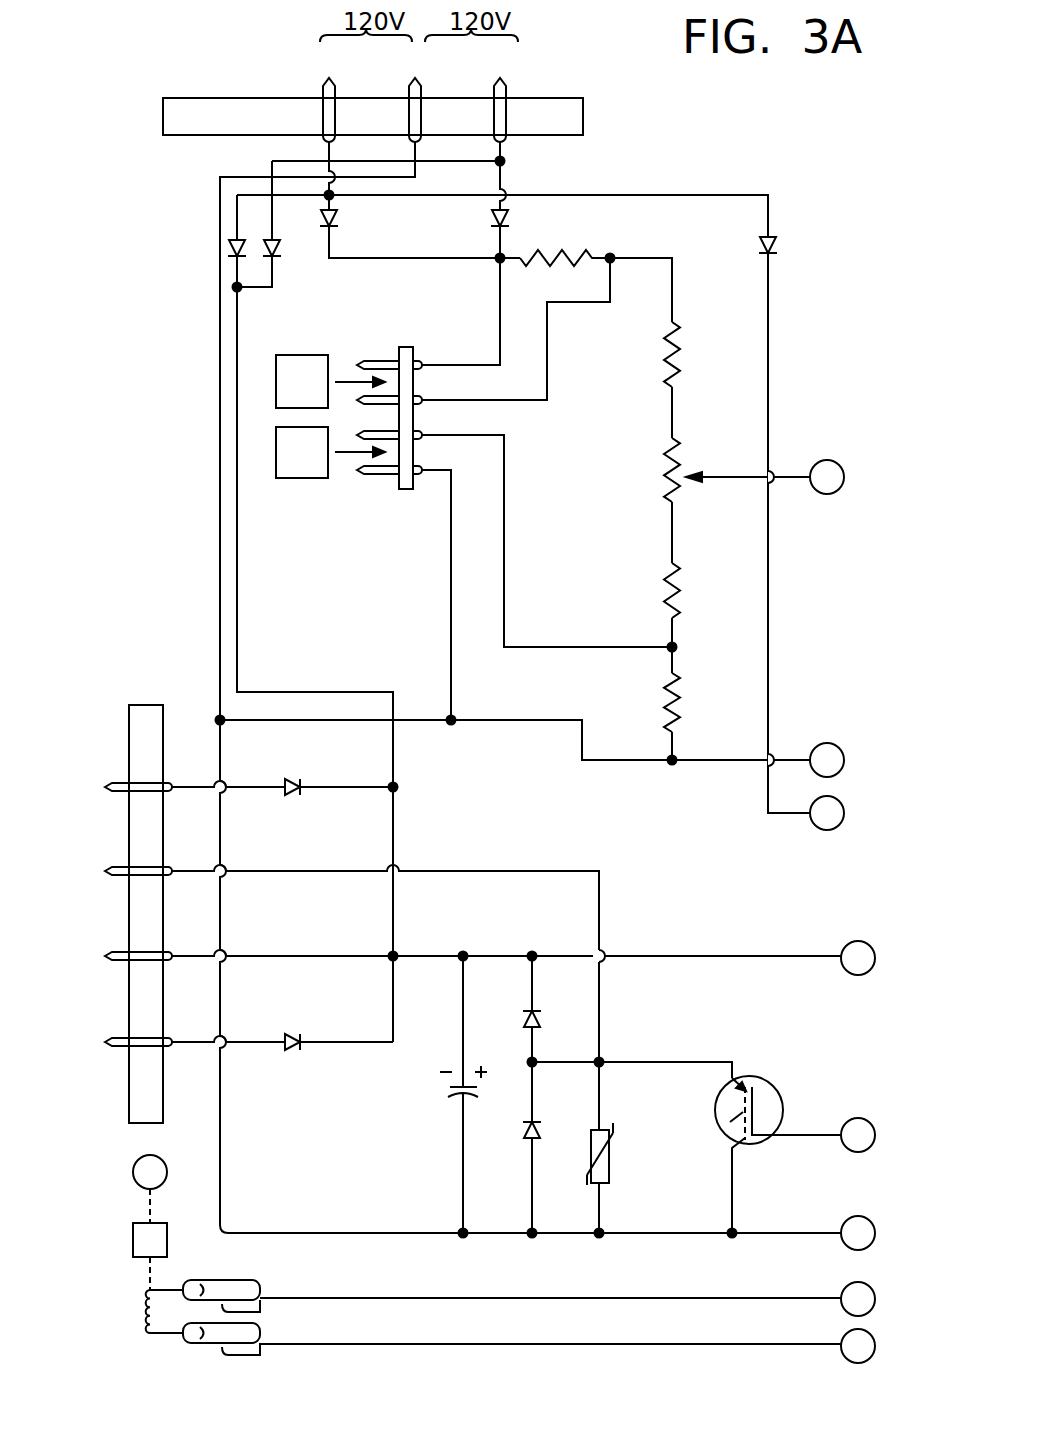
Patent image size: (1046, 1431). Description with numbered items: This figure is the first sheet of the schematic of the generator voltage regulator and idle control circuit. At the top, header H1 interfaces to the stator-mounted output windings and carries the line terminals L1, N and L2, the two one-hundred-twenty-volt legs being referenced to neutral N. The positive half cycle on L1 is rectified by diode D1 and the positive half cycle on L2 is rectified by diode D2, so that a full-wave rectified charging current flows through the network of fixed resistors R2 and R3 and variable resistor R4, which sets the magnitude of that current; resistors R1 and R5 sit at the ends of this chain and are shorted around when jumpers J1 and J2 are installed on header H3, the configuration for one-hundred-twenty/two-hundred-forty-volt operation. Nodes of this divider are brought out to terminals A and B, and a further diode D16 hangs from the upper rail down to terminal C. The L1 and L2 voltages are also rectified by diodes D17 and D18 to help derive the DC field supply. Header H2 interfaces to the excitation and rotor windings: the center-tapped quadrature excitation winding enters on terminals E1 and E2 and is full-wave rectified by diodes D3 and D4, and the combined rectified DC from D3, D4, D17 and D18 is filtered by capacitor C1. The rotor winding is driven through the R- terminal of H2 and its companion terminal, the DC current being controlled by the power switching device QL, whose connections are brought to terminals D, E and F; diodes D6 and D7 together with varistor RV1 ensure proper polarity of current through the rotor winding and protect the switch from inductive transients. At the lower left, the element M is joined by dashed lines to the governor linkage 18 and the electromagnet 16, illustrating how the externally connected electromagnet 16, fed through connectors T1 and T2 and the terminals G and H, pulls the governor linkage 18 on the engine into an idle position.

The header H1 is at (349, 116).
The line terminal L1 is at (329, 96).
The neutral terminal N is at (414, 96).
The line terminal L2 is at (500, 96).
The diode D1 is at (350, 220).
The diode D2 is at (482, 220).
The diode D3 is at (295, 767).
The diode D4 is at (297, 1023).
The diode D6 is at (512, 1019).
The diode D7 is at (512, 1139).
The diode D16 is at (799, 246).
The diode D17 is at (206, 248).
The diode D18 is at (296, 263).
The resistor R1 is at (555, 244).
The fixed resistor R2 is at (695, 354).
The fixed resistor R3 is at (694, 590).
The variable resistor R4 is at (694, 470).
The resistor R5 is at (694, 702).
The varistor RV1 is at (624, 1147).
The capacitor C1 is at (449, 1094).
The power transistor QL is at (778, 1139).
The header H3 is at (390, 400).
The jumper J1 is at (330, 381).
The jumper J2 is at (330, 452).
The header H2 is at (147, 898).
The excitation terminal E1 is at (117, 788).
The rotor terminal R- is at (117, 872).
The excitation terminal E2 is at (117, 1043).
The terminal A is at (809, 477).
The terminal B is at (827, 760).
The terminal C is at (827, 813).
The terminal D is at (858, 958).
The terminal E is at (858, 1135).
The terminal F is at (858, 1233).
The terminal G is at (567, 1299).
The terminal H is at (567, 1346).
The motor M is at (150, 1172).
The governor linkage 18 is at (133, 1232).
The electromagnet 16 is at (146, 1305).
The connector T1 is at (221, 1282).
The connector T2 is at (221, 1352).